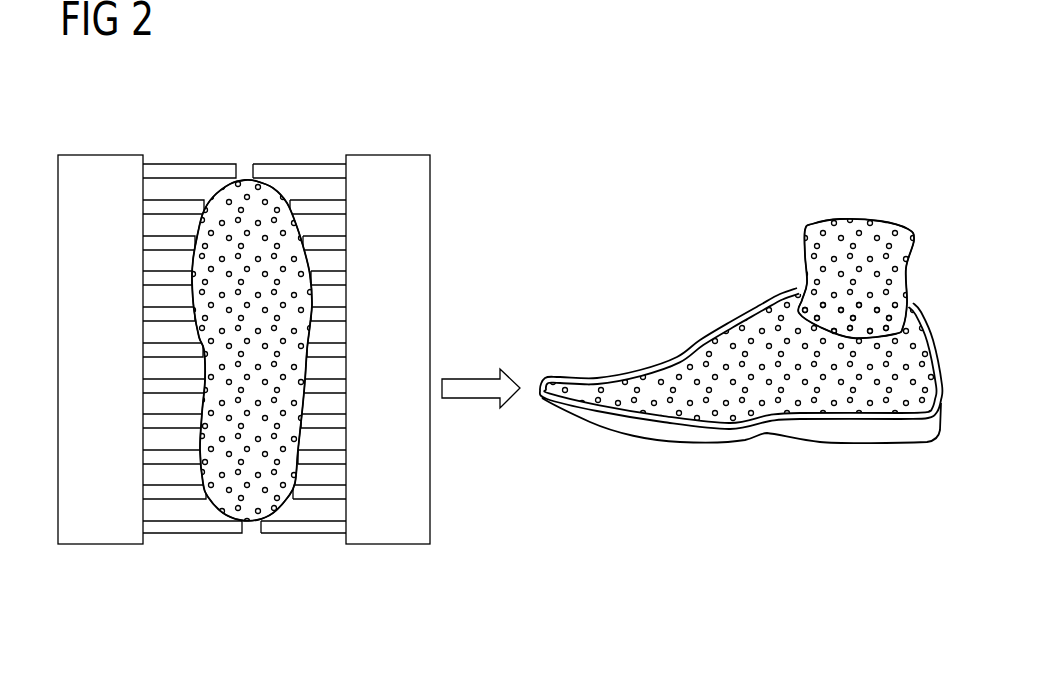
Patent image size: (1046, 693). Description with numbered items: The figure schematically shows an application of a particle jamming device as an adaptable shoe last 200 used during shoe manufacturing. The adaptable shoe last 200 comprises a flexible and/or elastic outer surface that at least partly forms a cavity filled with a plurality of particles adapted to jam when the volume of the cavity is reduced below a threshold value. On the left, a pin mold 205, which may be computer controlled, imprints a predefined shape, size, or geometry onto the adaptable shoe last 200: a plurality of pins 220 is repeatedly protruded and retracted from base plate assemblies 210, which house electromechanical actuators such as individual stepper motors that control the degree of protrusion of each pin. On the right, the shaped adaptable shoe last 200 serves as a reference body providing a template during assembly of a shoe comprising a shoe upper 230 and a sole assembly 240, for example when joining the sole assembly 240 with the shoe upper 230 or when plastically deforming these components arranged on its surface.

The adaptable shoe last 200 is at (245, 190).
The pin mold 205 is at (294, 347).
The base plate assembly 210 is at (102, 165).
The plurality of pins 220 is at (203, 528).
The shoe upper 230 is at (697, 341).
The sole assembly 240 is at (765, 425).